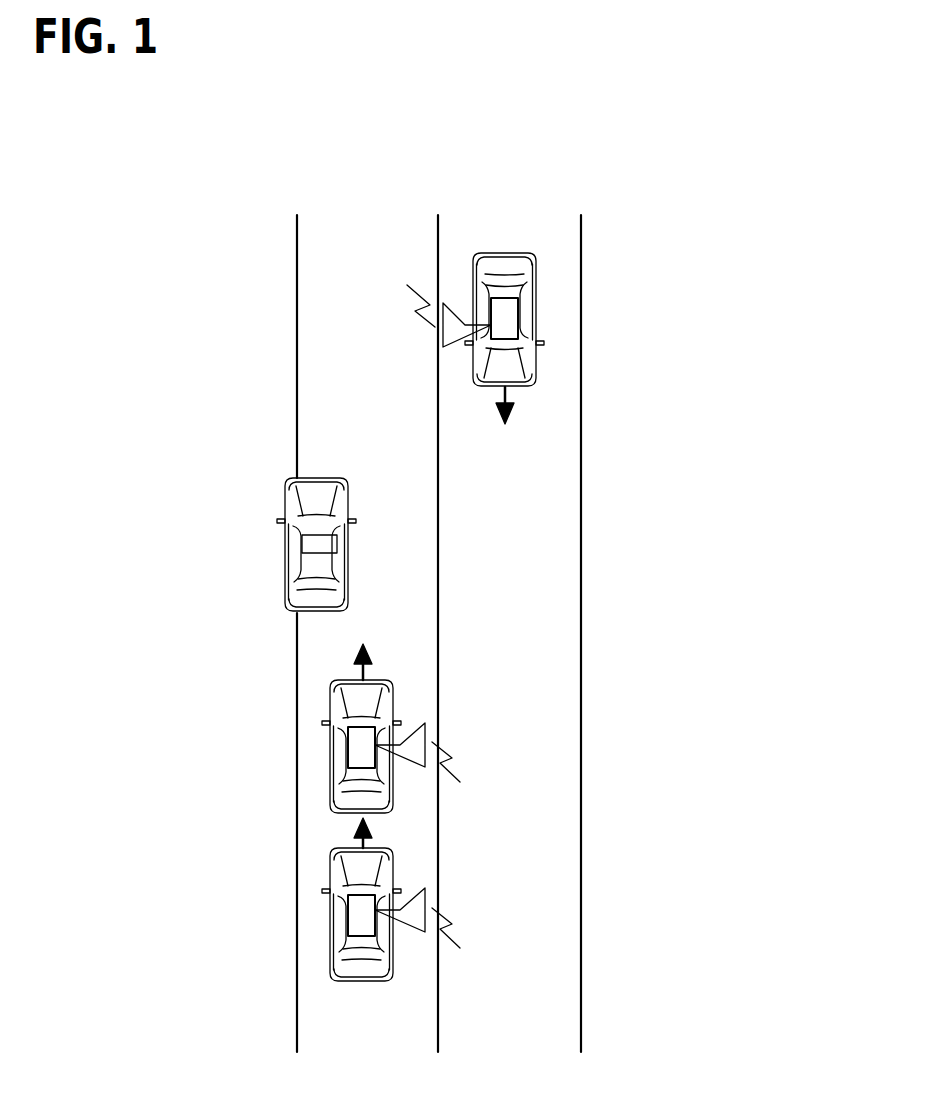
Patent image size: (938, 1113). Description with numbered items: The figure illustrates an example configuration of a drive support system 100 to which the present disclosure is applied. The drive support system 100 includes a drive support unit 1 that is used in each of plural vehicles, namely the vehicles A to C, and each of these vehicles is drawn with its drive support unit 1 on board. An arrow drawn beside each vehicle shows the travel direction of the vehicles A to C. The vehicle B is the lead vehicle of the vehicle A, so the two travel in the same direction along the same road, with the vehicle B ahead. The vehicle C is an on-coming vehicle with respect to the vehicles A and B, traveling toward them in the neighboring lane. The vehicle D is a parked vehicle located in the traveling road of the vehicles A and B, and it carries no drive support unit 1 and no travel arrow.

The drive support system 100 is at (673, 160).
The drive support unit 1 is at (365, 938).
The vehicle A is at (330, 953).
The vehicle B is at (330, 793).
The vehicle C is at (537, 288).
The vehicle D is at (290, 600).